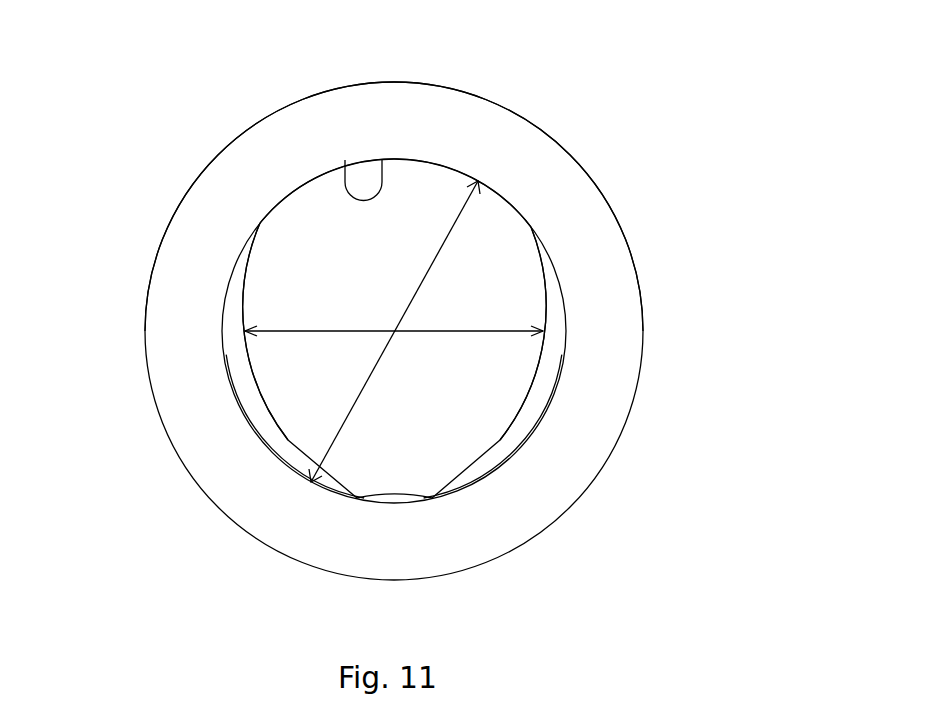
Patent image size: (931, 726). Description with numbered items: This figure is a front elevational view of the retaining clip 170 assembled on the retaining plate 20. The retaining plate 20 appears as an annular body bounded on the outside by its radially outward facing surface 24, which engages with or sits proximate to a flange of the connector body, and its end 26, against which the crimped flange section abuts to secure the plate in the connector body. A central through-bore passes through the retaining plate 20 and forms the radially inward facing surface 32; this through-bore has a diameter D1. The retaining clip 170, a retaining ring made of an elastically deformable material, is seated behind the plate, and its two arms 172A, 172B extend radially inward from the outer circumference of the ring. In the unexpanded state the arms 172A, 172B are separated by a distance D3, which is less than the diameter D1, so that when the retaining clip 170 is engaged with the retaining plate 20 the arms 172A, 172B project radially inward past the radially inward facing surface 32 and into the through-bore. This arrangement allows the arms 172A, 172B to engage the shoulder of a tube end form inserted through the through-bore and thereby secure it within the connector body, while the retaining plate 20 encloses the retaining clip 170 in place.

The retaining plate 20 is at (597, 232).
The radially outward facing surface 24 is at (590, 172).
The end 26 is at (613, 330).
The radially inward facing surface 32 is at (345, 168).
The retaining clip 170 is at (248, 397).
The arm 172A is at (238, 310).
The arm 172B is at (543, 392).
The diameter D1 is at (362, 395).
The distance D3 is at (278, 331).